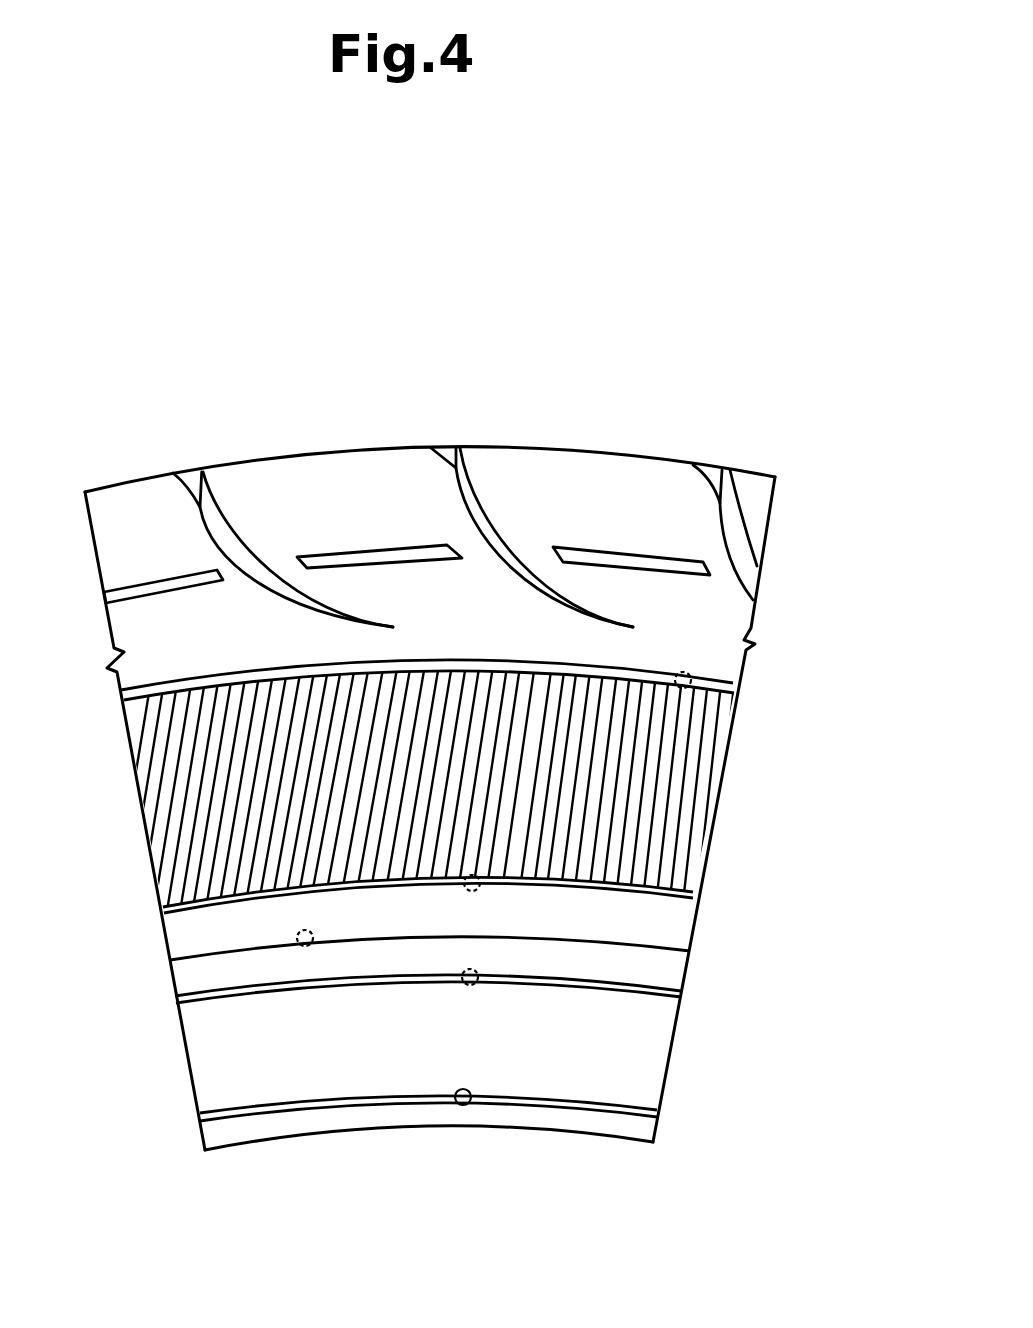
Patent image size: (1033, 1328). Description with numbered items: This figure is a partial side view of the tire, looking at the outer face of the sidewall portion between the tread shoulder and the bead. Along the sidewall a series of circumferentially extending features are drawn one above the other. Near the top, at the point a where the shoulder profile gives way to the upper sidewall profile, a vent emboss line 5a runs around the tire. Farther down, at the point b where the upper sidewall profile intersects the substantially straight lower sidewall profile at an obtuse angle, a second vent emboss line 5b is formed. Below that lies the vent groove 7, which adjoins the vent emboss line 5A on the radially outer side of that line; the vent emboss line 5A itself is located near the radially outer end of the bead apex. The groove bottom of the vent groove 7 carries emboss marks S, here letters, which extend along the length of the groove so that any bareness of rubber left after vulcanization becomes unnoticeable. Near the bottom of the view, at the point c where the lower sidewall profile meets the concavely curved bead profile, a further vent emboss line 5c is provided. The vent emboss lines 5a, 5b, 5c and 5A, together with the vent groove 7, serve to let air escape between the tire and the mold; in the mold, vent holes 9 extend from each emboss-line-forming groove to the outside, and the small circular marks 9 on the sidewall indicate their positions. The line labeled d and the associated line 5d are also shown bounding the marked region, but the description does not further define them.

The vent hole 9 is at (690, 676).
The vent emboss line 5a is at (495, 656).
The point a is at (737, 687).
The vent emboss line 5b is at (494, 865).
The point b is at (697, 895).
The marking band upper line 5d is at (425, 955).
The position d is at (692, 953).
The vent groove 7 is at (440, 1031).
The emboss marks S is at (672, 972).
The vent emboss line 5A is at (680, 997).
The vent emboss line 5c is at (497, 1099).
The point c is at (657, 1115).